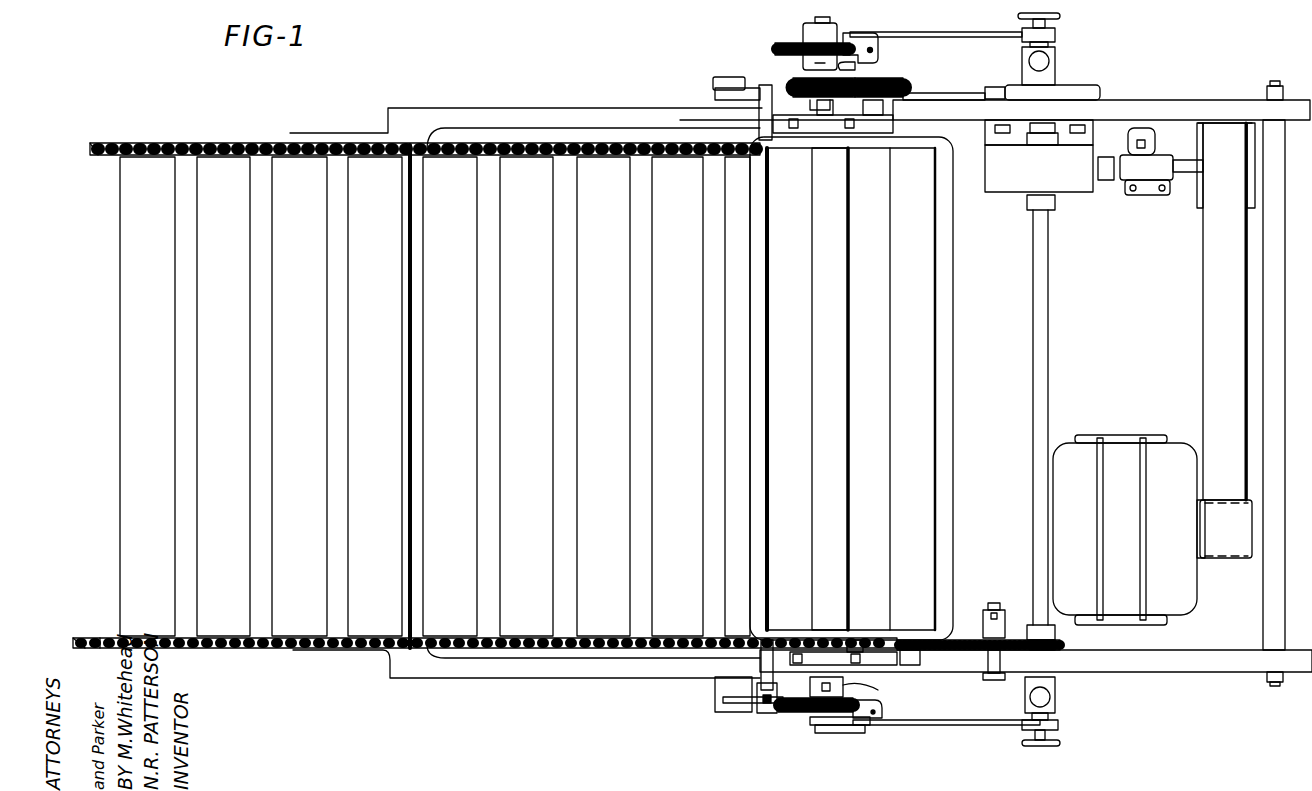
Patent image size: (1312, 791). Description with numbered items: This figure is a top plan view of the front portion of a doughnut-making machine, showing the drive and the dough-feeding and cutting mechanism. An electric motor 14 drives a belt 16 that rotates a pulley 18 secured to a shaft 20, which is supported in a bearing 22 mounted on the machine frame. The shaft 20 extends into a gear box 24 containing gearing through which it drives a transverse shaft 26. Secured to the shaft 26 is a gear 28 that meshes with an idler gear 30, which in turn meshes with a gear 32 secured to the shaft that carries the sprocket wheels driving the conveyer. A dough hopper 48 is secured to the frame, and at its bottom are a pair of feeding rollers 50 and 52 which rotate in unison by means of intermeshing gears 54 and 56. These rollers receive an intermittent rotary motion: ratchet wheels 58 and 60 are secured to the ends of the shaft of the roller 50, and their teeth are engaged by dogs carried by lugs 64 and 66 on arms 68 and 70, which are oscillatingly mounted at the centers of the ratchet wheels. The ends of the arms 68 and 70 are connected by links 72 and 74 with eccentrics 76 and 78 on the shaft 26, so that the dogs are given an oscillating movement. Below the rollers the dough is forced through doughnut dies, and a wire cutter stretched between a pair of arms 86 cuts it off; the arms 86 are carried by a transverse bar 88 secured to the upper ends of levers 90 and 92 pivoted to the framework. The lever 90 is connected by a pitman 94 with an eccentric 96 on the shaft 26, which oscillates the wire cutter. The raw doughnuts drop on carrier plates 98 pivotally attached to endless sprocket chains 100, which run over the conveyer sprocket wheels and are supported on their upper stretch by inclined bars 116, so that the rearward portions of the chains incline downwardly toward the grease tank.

The electric motor 14 is at (1190, 588).
The belt 16 is at (1213, 338).
The pulley 18 is at (1252, 132).
The shaft 20 is at (1183, 160).
The bearing 22 is at (1128, 175).
The gear box 24 is at (1075, 178).
The transverse shaft 26 is at (1050, 300).
The gear 28 is at (1060, 645).
The idler gear 30 is at (972, 635).
The gear 32 is at (920, 640).
The dough hopper 48 is at (886, 388).
The feeding roller 50 is at (833, 273).
The feeding roller 52 is at (878, 318).
The gear 54 is at (800, 78).
The gear 56 is at (898, 85).
The ratchet wheel 58 is at (787, 43).
The ratchet wheel 60 is at (795, 712).
The lug 64 is at (860, 50).
The lug 66 is at (875, 715).
The arm 68 is at (852, 67).
The arm 70 is at (855, 725).
The link 72 is at (968, 33).
The link 74 is at (978, 725).
The eccentric 76 is at (1055, 35).
The eccentric 78 is at (1060, 725).
The arm 86 is at (790, 90).
The transverse bar 88 is at (760, 130).
The lever 90 is at (715, 88).
The lever 92 is at (735, 712).
The pitman 94 is at (972, 93).
The eccentric 96 is at (1075, 90).
The carrier plate 98 is at (530, 612).
The endless sprocket chain 100 is at (245, 127).
The inclined bar 116 is at (85, 638).